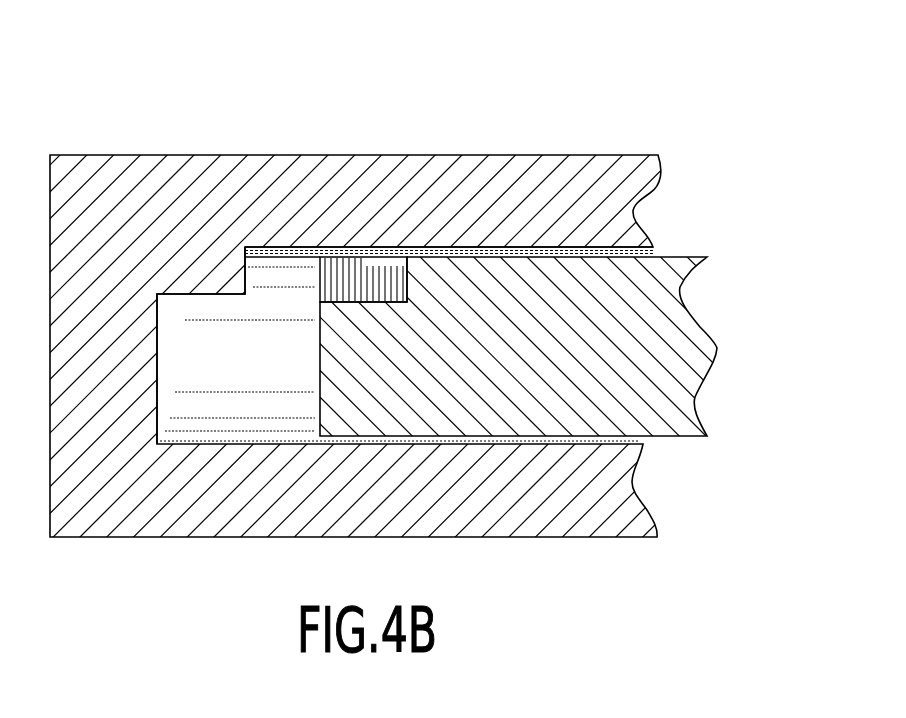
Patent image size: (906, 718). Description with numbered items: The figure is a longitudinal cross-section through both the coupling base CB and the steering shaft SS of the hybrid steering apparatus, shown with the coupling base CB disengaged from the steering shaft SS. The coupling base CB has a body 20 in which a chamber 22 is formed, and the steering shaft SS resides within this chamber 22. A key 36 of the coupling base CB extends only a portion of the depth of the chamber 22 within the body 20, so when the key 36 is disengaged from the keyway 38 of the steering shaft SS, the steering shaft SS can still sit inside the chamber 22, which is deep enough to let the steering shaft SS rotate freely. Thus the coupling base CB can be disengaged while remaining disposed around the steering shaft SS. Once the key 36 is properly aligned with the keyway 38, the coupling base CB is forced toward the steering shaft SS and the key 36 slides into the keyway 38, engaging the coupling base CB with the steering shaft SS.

The body 20 is at (153, 155).
The chamber 22 is at (643, 440).
The key 36 is at (215, 280).
The keyway 38 is at (370, 280).
The steering shaft SS is at (668, 268).
The coupling base CB is at (556, 100).